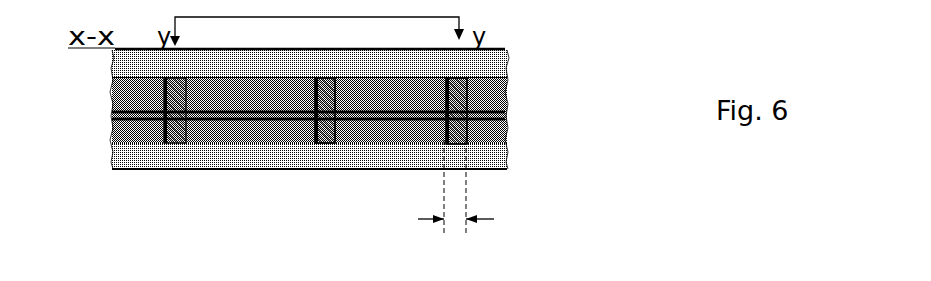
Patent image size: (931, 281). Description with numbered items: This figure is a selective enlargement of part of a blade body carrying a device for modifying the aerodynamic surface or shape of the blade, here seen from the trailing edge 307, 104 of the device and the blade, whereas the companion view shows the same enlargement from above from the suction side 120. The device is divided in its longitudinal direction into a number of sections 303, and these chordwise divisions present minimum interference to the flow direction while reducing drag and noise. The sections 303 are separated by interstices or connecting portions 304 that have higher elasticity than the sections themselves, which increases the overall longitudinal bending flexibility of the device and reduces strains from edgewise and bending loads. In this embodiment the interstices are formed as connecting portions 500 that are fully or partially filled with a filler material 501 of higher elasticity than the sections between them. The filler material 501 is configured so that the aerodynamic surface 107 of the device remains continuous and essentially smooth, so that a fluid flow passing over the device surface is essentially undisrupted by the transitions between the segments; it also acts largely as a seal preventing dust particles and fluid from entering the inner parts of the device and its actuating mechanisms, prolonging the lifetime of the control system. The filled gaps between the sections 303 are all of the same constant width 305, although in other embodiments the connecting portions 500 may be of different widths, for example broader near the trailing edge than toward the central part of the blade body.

The suction side 120 is at (485, 48).
The aerodynamic surface 107 is at (493, 62).
The trailing edge 307 is at (490, 115).
The trailing edge 104 is at (368, 102).
The interstices or connecting portions 304 is at (163, 118).
The sections 303 is at (363, 128).
The connecting portions 500 is at (320, 132).
The filler material 501 is at (453, 145).
The width 305 is at (467, 196).